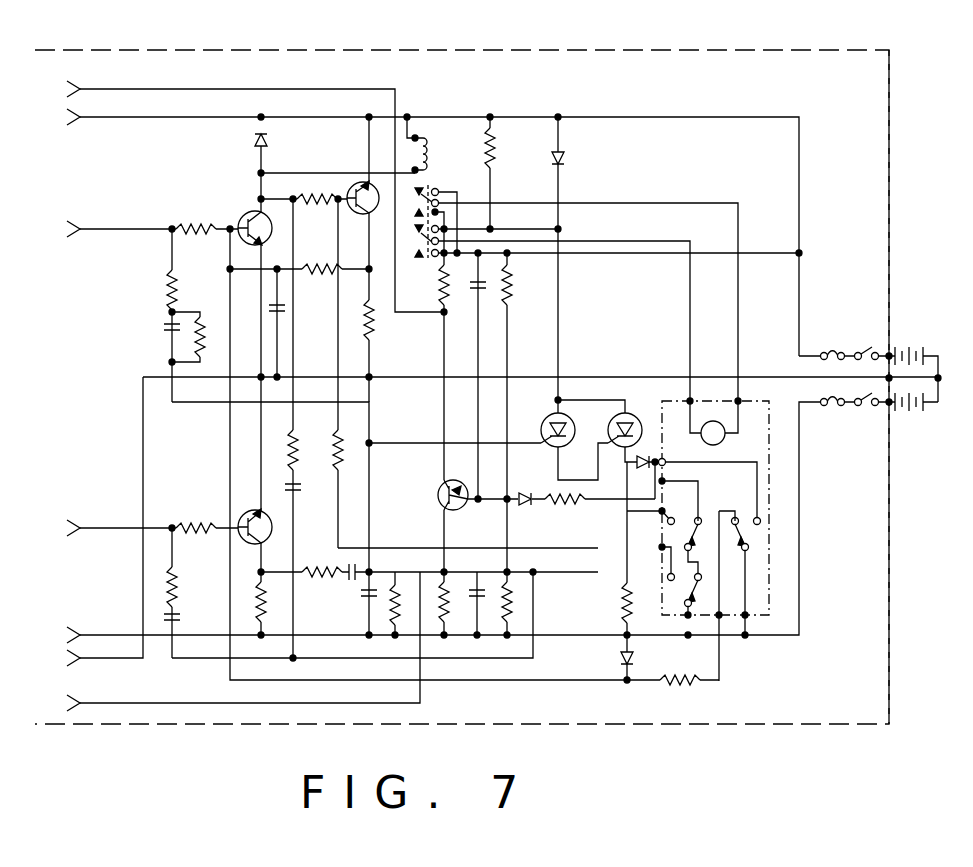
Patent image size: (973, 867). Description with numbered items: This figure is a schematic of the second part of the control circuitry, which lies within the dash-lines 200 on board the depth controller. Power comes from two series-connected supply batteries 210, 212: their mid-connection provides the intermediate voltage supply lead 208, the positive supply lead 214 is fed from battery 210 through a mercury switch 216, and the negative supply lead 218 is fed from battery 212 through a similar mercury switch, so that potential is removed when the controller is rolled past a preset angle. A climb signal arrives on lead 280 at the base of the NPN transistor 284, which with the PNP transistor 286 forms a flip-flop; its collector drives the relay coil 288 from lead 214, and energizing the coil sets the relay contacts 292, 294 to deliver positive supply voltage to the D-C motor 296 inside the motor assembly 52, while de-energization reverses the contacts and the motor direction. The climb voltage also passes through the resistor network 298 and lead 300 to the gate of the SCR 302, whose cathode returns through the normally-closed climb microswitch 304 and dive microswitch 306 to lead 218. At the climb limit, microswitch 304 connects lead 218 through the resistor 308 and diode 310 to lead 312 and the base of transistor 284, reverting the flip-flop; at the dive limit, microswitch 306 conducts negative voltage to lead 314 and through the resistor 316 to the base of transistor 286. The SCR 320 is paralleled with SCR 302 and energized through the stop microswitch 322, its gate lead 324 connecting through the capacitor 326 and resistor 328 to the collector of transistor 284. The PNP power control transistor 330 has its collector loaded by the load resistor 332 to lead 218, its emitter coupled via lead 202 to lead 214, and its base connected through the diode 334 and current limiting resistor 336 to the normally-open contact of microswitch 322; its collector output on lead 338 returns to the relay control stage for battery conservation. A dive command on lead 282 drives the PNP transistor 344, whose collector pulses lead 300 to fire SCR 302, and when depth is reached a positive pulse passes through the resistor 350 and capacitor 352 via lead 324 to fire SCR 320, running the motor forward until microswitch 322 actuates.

The dash-lines 200 is at (471, 50).
The lead 202 is at (74, 84).
The positive voltage supply lead 214 is at (74, 120).
The climb input lead 280 is at (270, 139).
The NPN transistor 284 is at (242, 196).
The PNP transistor 286 is at (362, 242).
The relay coil 288 is at (428, 150).
The relay contacts 292 is at (422, 196).
The relay contacts 294 is at (420, 247).
The resistor network 298 is at (178, 305).
The lead 312 is at (230, 314).
The intermediate voltage supply lead 208 is at (74, 660).
The lead 300 is at (370, 404).
The SCR 302 is at (544, 420).
The SCR 320 is at (618, 418).
The resistor 328 is at (298, 447).
The resistor 316 is at (295, 484).
The capacitor 326 is at (337, 472).
The PNP transistor 330 is at (438, 494).
The diode 334 is at (524, 507).
The current limiting resistor 336 is at (552, 505).
The lead 314 is at (518, 548).
The PNP transistor 344 is at (258, 563).
The resistor 350 is at (178, 588).
The capacitor 352 is at (180, 616).
The load resistor 332 is at (448, 588).
The lead 324 is at (558, 572).
The resistor 308 is at (622, 600).
The negative voltage supply lead 218 is at (74, 632).
The diode 310 is at (634, 657).
The stop microswitch 322 is at (748, 539).
The climb microswitch 304 is at (704, 552).
The dive microswitch 306 is at (704, 606).
The D-C motor 296 is at (721, 445).
The motor assembly 52 is at (769, 481).
The supply battery 210 is at (906, 348).
The supply battery 212 is at (908, 414).
The mercury switch 216 is at (878, 348).
The dive output lead 282 is at (74, 522).
The lead 338 is at (74, 704).